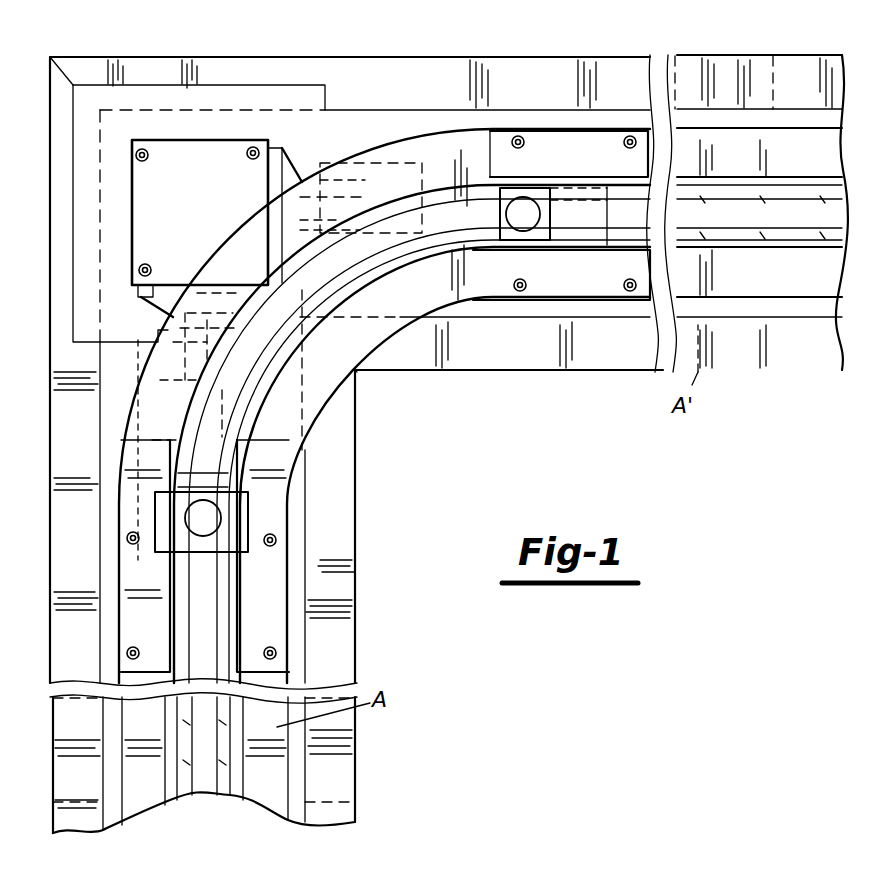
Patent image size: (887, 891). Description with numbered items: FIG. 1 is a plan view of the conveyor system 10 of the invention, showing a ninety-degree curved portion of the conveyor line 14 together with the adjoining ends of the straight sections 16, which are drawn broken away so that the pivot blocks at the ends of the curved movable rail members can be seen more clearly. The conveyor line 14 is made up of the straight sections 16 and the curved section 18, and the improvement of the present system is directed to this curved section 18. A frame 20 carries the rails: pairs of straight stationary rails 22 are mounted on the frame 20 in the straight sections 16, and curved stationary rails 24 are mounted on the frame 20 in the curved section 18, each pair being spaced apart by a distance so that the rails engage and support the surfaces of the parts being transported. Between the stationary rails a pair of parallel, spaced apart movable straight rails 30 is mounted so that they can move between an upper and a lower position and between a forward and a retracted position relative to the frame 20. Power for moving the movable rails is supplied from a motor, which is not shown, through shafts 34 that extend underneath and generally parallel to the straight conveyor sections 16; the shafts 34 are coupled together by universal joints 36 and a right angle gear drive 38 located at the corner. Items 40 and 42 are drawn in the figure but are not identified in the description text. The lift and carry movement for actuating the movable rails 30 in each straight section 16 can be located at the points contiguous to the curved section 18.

The conveyor system 10 is at (430, 395).
The conveyor line 14 is at (265, 817).
The straight sections 16 is at (787, 110).
The curved section 18 is at (138, 432).
The frame 20 is at (346, 549).
The straight stationary rails 22 is at (810, 155).
The curved stationary rails 24 is at (394, 322).
The movable straight rails 30 is at (788, 232).
The shafts 34 is at (325, 197).
The universal joints 36 is at (420, 170).
The right angle gear drive 38 is at (233, 142).
The curved rail 40 is at (383, 243).
The roller bearings 42 is at (522, 233).